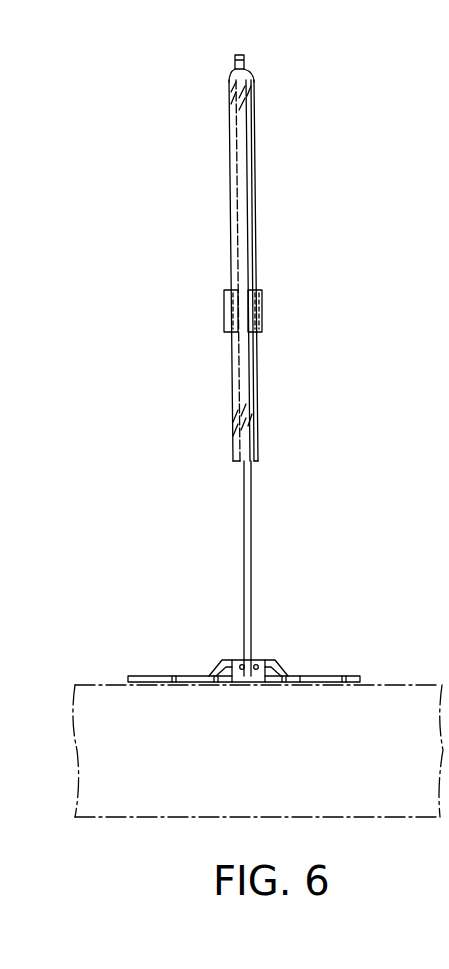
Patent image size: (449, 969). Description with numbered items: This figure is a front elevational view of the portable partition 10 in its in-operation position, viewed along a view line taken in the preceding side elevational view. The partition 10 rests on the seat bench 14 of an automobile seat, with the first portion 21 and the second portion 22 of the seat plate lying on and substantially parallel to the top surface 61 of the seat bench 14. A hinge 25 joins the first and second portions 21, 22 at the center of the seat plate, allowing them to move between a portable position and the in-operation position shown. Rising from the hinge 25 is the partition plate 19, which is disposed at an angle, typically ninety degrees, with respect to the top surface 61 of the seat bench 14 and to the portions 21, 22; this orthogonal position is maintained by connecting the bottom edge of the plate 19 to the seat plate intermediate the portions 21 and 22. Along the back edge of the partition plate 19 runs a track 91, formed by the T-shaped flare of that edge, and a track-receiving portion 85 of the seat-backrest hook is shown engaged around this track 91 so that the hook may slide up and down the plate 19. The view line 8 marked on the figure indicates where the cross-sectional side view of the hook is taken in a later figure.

The portable partition 10 is at (260, 175).
The view line 8— 8 is at (214, 225).
The track-receiving portion 85 is at (262, 308).
The track 91 is at (258, 343).
The partition plate 19 is at (252, 500).
The hinge 25 is at (257, 683).
The first portion 21 is at (152, 675).
The second portion 22 is at (328, 672).
The top surface 61 is at (412, 683).
The seat bench 14 is at (317, 817).